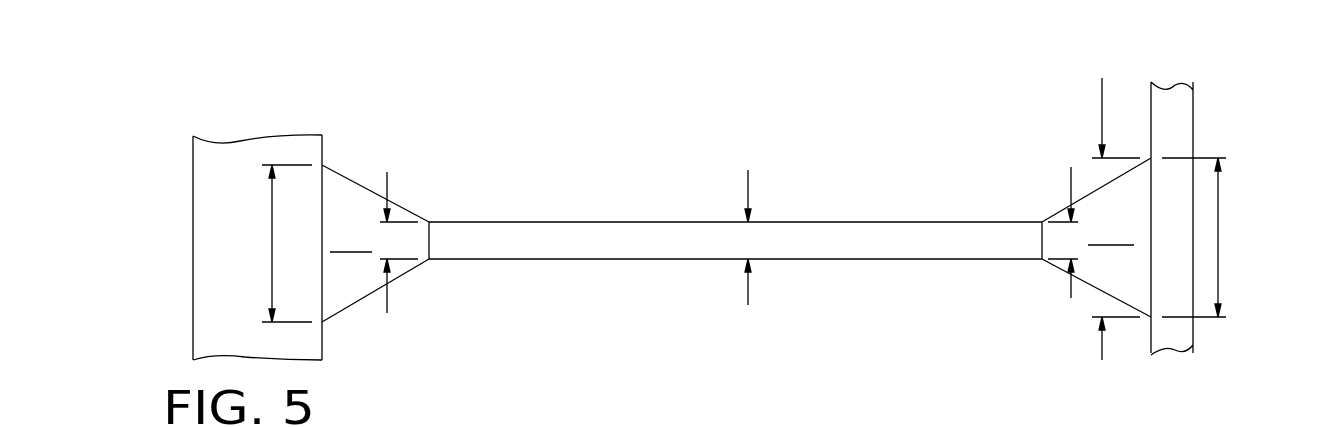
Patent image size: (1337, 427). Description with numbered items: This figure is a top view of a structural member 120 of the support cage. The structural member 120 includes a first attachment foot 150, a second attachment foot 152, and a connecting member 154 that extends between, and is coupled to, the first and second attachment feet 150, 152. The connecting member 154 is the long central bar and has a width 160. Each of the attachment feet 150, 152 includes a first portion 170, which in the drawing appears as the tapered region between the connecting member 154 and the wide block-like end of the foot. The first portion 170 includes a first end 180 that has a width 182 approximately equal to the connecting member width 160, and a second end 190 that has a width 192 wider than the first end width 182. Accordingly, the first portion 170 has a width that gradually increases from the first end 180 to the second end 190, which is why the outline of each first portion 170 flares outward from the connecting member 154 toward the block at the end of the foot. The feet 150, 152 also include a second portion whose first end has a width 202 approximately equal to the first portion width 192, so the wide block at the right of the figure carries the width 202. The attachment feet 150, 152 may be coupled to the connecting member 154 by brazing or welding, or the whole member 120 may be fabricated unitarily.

The structural member 120 is at (918, 50).
The first attachment foot 150 is at (335, 303).
The second attachment foot 152 is at (1100, 187).
The connecting member 154 is at (537, 222).
The connecting member width 160 is at (748, 183).
The first portion 170 is at (732, 237).
The first end 180 is at (432, 243).
The first end width 182 is at (388, 183).
The second end 190 is at (322, 202).
The second end width 192 is at (270, 255).
The first end width of second portion 202 is at (1220, 252).